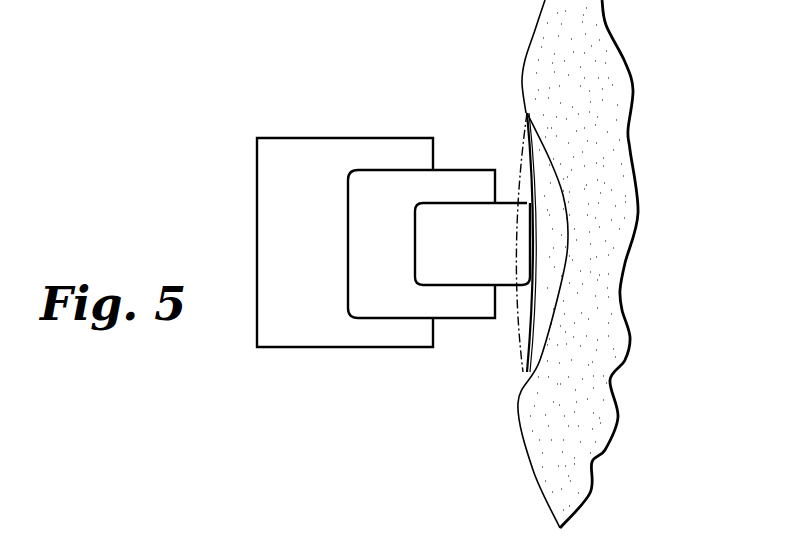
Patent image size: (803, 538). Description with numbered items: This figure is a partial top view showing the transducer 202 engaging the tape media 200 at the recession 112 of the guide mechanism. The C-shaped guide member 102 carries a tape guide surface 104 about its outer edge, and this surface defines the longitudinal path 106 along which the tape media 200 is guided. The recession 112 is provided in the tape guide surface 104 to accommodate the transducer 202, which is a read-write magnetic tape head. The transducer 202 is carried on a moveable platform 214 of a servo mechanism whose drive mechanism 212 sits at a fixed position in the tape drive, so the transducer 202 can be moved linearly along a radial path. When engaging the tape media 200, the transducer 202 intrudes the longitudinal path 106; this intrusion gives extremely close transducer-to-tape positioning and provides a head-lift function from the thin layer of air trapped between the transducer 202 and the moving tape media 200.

The guide member 102 is at (557, 48).
The tape guide surface 104 is at (161, 531).
The longitudinal path 106 is at (520, 337).
The recession 112 is at (563, 194).
The tape media 200 is at (535, 305).
The transducer 202 is at (457, 217).
The drive mechanism 212 is at (308, 145).
The moveable platform 214 is at (388, 178).